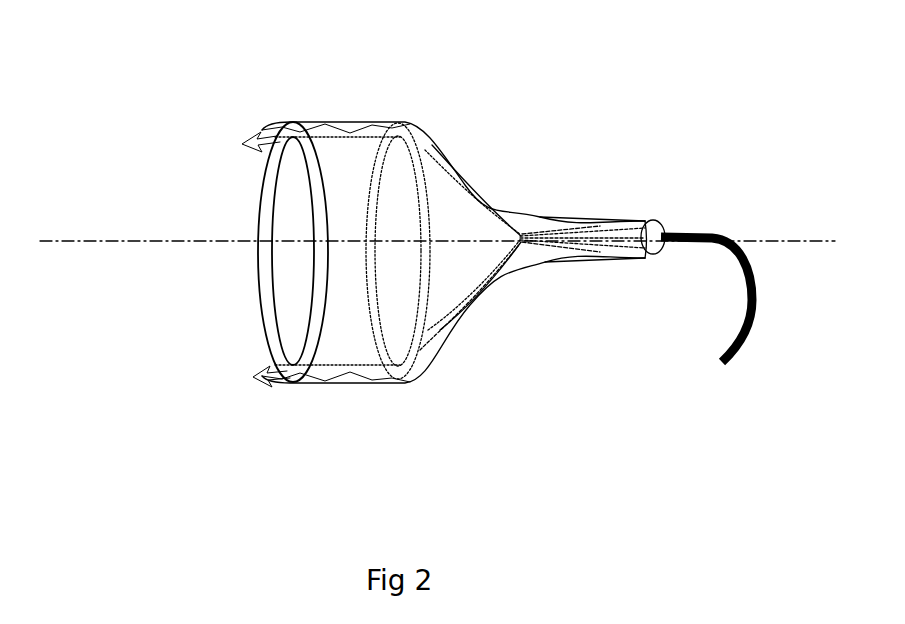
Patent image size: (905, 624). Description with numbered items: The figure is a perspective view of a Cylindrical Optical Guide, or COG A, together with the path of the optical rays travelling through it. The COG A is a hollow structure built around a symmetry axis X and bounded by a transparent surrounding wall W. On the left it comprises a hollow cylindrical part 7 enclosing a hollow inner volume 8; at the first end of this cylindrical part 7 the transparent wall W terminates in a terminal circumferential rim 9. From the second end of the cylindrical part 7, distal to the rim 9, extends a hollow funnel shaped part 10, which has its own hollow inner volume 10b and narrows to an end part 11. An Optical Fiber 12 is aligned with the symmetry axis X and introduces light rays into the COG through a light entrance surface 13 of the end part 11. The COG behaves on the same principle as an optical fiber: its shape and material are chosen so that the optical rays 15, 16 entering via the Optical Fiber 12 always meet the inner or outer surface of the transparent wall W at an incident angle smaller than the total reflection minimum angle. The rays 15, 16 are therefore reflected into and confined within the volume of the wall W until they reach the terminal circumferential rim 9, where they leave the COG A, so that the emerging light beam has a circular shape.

The hollow cylindrical part 7 is at (371, 410).
The hollow inner volume 8 is at (331, 354).
The terminal circumferential rim 9 is at (258, 173).
The hollow funnel shaped part 10 is at (478, 328).
The hollow inner volume 10b is at (447, 288).
The end part 11 is at (637, 211).
The Optical Fiber 12 is at (725, 226).
The light entrance surface 13 is at (667, 211).
The Optical ray 15 is at (502, 285).
The Optical ray 16 is at (527, 244).
The transparent surrounding wall W is at (380, 119).
The Cylindrical Optical Guide A is at (511, 188).
The symmetry axis X is at (137, 252).